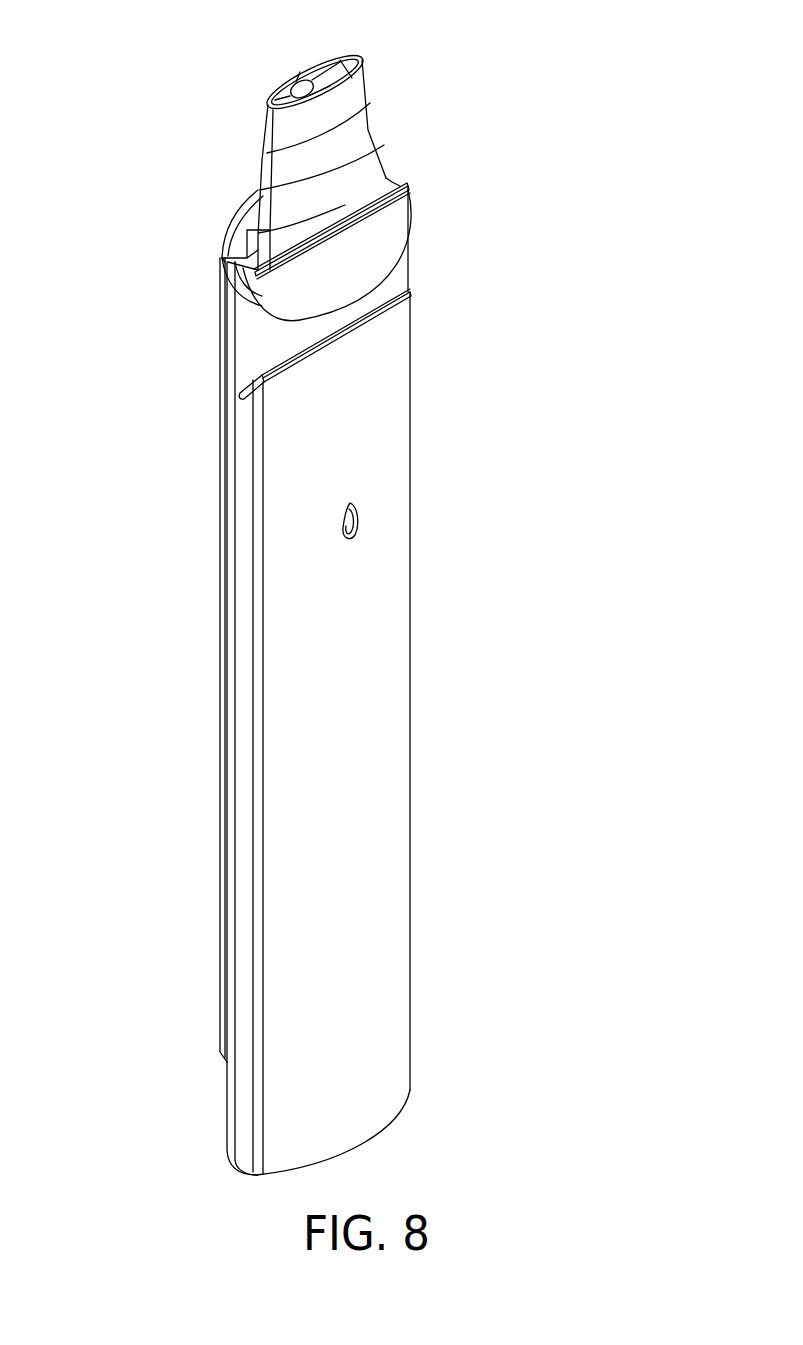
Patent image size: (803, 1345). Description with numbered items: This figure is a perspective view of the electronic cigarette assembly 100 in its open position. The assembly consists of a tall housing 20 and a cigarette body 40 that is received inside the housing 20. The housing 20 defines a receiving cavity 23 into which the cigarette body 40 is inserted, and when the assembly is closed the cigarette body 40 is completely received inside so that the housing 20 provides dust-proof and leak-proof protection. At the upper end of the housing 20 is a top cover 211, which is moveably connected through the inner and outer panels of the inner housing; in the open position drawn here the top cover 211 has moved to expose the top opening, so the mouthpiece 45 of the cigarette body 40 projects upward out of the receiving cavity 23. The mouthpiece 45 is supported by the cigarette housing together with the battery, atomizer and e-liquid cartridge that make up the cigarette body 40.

The electronic cigarette assembly 100 is at (495, 131).
The housing 20 is at (358, 654).
The top cover 211 is at (373, 246).
The receiving cavity 23 is at (392, 178).
The cigarette body 40 is at (222, 258).
The mouthpiece 45 is at (282, 127).